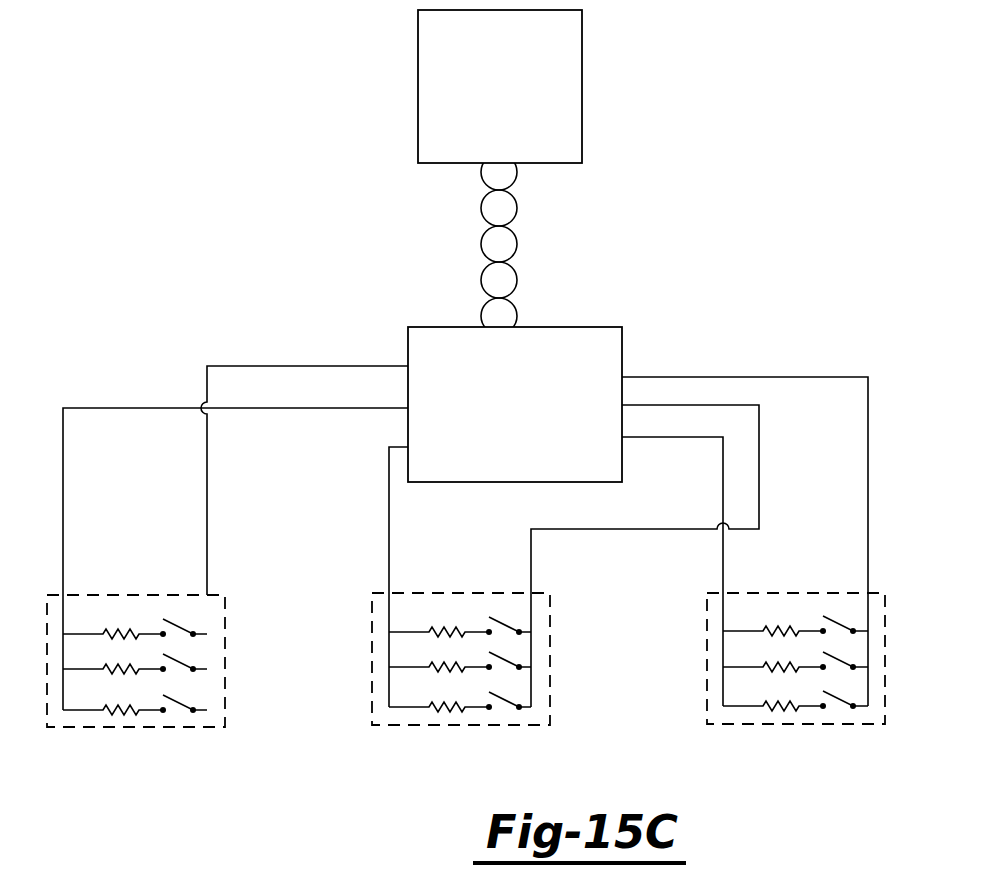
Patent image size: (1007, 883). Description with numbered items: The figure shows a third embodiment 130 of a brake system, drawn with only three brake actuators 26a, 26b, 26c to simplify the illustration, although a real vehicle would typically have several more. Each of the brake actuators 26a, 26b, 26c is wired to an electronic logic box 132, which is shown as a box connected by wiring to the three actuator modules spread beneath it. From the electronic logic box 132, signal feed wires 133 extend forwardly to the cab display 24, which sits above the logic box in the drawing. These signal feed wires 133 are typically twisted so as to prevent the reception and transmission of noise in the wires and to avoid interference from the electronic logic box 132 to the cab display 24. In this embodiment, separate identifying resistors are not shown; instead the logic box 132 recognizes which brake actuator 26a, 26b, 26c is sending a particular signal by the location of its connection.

The embodiment 130 is at (308, 131).
The cab display 24 is at (582, 86).
The signal feed wires 133 is at (482, 210).
The electronic logic box 132 is at (593, 327).
The brake actuator 26a is at (178, 727).
The brake actuator 26b is at (470, 725).
The brake actuator 26c is at (800, 724).